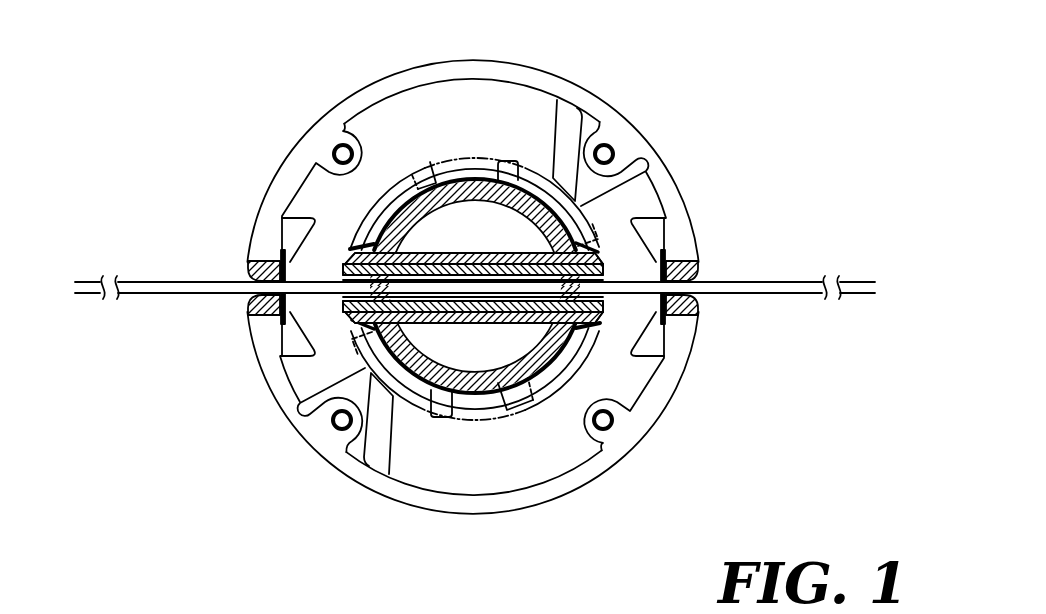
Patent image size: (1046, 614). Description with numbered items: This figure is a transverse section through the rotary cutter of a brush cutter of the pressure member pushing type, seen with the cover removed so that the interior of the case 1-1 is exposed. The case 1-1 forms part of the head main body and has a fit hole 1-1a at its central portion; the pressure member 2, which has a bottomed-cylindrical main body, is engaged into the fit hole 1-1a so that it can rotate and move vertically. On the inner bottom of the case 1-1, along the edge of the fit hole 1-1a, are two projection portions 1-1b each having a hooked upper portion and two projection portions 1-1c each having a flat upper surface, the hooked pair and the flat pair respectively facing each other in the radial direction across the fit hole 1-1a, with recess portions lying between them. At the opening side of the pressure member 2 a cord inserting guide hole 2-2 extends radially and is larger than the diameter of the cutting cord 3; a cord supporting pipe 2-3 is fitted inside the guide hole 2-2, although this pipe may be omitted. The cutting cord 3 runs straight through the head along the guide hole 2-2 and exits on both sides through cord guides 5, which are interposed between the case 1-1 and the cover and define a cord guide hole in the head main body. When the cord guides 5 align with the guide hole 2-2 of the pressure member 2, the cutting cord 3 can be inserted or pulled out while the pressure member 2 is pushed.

The case 1-1 is at (284, 151).
The fit hole 1-1a is at (449, 395).
The projection portions 1-1b is at (558, 222).
The projection portions 1-1c is at (402, 193).
The pressure member 2 is at (505, 387).
The cord inserting guide hole 2-2 is at (490, 266).
The cord supporting pipe 2-3 is at (449, 256).
The cutting cord 3 is at (176, 282).
The cord guides 5 is at (257, 321).